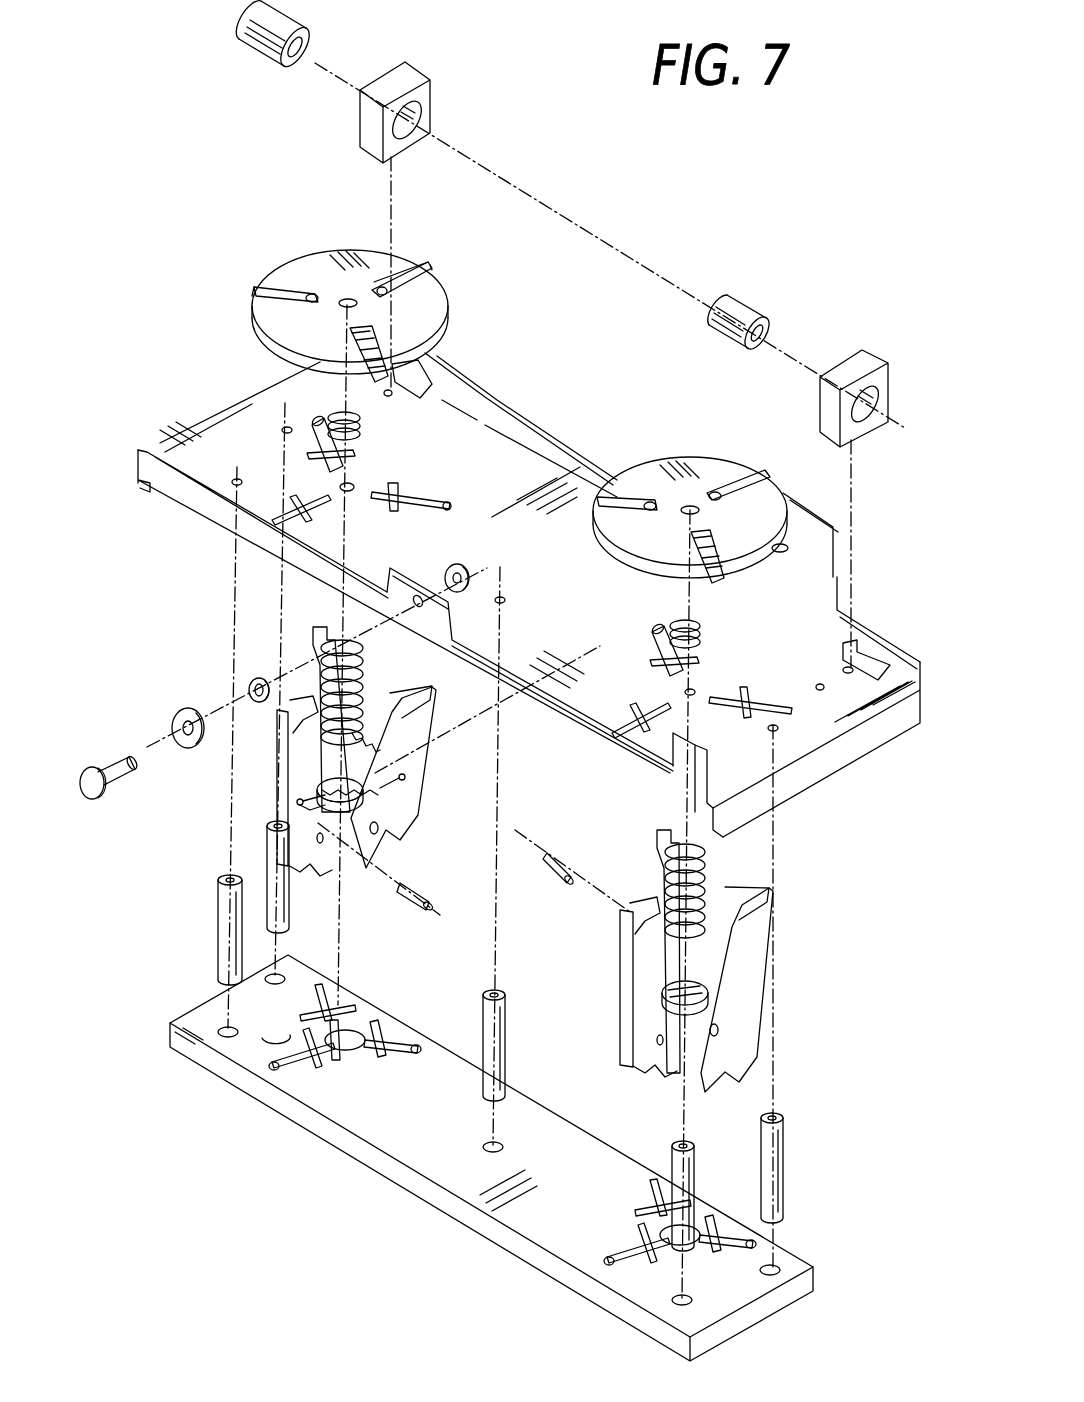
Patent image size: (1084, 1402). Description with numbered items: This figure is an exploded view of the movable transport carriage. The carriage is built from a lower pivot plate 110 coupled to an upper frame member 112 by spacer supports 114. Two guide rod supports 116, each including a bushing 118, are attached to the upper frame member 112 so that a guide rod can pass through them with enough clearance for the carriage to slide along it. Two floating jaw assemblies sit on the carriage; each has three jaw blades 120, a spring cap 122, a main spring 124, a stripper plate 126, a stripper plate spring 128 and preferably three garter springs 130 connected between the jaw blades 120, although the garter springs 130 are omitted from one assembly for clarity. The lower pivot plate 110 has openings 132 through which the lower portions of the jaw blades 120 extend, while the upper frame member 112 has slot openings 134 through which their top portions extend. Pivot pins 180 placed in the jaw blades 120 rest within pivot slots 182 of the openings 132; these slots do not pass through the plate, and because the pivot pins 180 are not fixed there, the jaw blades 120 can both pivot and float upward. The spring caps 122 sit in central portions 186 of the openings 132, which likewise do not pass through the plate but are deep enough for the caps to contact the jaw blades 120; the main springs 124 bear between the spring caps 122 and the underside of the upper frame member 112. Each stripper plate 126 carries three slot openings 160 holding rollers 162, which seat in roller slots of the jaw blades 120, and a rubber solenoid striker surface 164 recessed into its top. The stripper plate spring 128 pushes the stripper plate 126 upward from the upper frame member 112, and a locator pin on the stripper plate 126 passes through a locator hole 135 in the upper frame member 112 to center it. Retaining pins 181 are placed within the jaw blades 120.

The lower pivot plate 110 is at (387, 1137).
The upper frame member 112 is at (203, 452).
The spacer supports 114 is at (267, 848).
The guide rod supports 116 is at (868, 427).
The bushings 118 is at (747, 310).
The jaw blades 120 is at (745, 1014).
The spring cap 122 is at (670, 996).
The main spring 124 is at (704, 897).
The stripper plate 126 is at (695, 458).
The stripper plate spring 128 is at (702, 632).
The garter springs 130 is at (359, 741).
The openings 132 is at (352, 1070).
The slot openings 134 is at (438, 502).
The locator hole 135 is at (349, 490).
The slot openings 160 is at (425, 268).
The rollers 162 is at (305, 285).
The rubber solenoid striker surface 164 is at (380, 320).
The pivot pins 180 is at (411, 907).
The retaining pins 181 is at (555, 856).
The pivot slots 182 is at (265, 1045).
The central portions 186 is at (355, 1022).